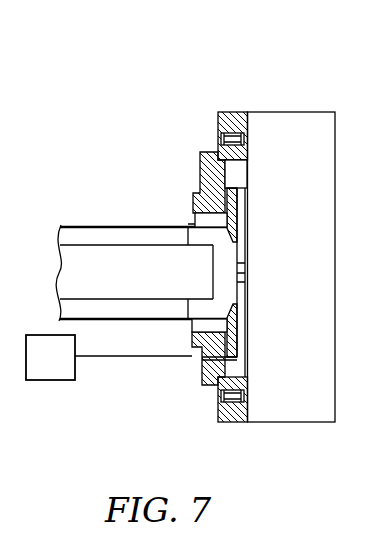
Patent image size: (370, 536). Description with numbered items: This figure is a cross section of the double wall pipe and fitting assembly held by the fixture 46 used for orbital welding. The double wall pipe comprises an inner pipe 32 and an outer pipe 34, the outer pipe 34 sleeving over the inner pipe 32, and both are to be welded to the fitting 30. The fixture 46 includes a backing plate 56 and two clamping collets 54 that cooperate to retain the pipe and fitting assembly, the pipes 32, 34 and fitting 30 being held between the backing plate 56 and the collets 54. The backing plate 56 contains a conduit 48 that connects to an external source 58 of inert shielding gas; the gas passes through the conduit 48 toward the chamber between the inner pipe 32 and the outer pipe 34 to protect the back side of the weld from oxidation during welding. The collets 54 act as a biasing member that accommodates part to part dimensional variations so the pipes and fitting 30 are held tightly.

The fixture 46 is at (265, 88).
The collets 54 is at (200, 152).
The backing plate 56 is at (236, 177).
The fitting 30 is at (229, 208).
The outer pipe 34 is at (106, 226).
The inner pipe 32 is at (165, 259).
The conduit 48 is at (193, 352).
The external source of inert shielding gas 58 is at (66, 371).